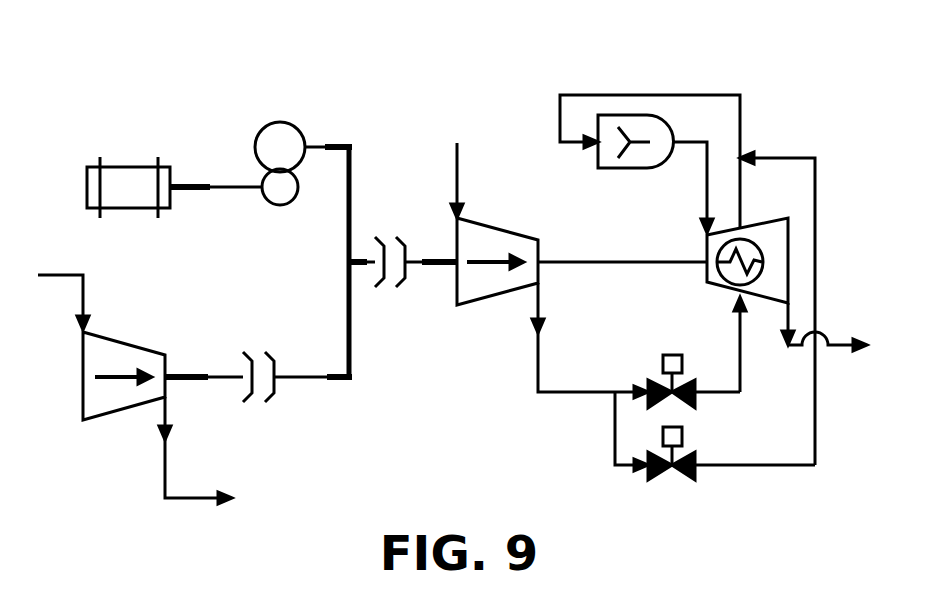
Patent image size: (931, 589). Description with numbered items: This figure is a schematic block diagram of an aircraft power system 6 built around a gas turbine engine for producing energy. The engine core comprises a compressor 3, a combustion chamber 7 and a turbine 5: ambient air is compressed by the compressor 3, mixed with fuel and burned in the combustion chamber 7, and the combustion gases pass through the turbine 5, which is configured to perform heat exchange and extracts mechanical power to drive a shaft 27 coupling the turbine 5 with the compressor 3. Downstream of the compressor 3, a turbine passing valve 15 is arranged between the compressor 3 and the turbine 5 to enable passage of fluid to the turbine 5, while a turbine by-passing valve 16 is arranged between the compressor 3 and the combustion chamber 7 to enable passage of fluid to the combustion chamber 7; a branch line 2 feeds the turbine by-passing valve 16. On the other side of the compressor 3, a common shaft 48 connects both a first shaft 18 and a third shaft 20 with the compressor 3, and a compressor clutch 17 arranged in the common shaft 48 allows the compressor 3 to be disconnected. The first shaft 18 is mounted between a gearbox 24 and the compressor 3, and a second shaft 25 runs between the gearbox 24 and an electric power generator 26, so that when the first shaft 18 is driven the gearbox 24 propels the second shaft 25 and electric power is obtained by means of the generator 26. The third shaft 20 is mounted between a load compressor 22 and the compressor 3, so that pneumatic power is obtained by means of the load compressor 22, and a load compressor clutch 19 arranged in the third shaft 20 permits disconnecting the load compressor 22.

The branch line 2 is at (613, 430).
The compressor 3 is at (488, 223).
The turbine 5 is at (790, 238).
The aircraft power system 6 is at (460, 93).
The combustion chamber 7 is at (632, 170).
The turbine passing valve 15 is at (657, 388).
The turbine by-passing valve 16 is at (677, 467).
The compressor clutch 17 is at (397, 237).
The first shaft 18 is at (348, 202).
The load compressor clutch 19 is at (267, 398).
The third shaft 20 is at (193, 373).
The load compressor 22 is at (120, 412).
The gearbox 24 is at (293, 123).
The second shaft 25 is at (193, 186).
The electric power generator 26 is at (127, 165).
The shaft 27 is at (622, 262).
The common shaft 48 is at (440, 267).